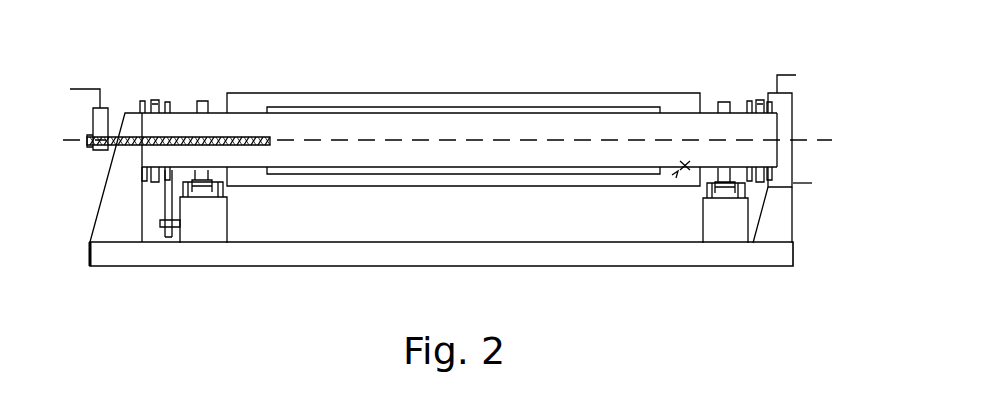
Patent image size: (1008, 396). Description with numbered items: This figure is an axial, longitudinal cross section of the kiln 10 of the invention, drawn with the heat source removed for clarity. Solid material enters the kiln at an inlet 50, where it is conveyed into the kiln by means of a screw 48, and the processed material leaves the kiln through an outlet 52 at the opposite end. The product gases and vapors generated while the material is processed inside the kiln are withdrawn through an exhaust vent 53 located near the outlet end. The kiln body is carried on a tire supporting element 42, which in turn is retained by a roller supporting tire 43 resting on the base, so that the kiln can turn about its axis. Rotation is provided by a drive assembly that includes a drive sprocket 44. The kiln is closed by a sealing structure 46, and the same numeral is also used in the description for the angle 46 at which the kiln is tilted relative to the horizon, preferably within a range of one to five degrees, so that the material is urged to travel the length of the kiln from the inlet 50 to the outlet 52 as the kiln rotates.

The reactor tube 10 is at (447, 113).
The tire supporting element 42 is at (208, 101).
The roller supporting tire 43 is at (207, 197).
The drive sprocket 44 is at (165, 194).
The sealing structure 46 is at (152, 103).
The screw 48 is at (235, 148).
The inlet 50 is at (110, 153).
The outlet 52 is at (794, 183).
The exhaust vent 53 is at (778, 93).